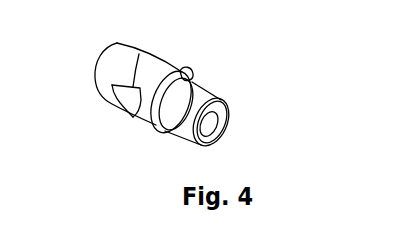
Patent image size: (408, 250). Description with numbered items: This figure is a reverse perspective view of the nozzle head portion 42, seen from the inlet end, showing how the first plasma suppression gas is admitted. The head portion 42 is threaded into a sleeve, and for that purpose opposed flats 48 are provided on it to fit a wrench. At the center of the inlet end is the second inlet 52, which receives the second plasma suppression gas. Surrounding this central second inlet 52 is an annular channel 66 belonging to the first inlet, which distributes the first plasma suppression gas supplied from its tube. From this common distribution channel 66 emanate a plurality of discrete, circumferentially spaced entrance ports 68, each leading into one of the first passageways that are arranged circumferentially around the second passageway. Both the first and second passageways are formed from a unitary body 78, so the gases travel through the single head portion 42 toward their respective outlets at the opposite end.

The head portion 42 is at (122, 29).
The opposed flats 48 is at (128, 97).
The second inlet 52 is at (207, 118).
The channel 66 is at (187, 75).
The entrance ports 68 is at (190, 83).
The unitary body 78 is at (190, 102).